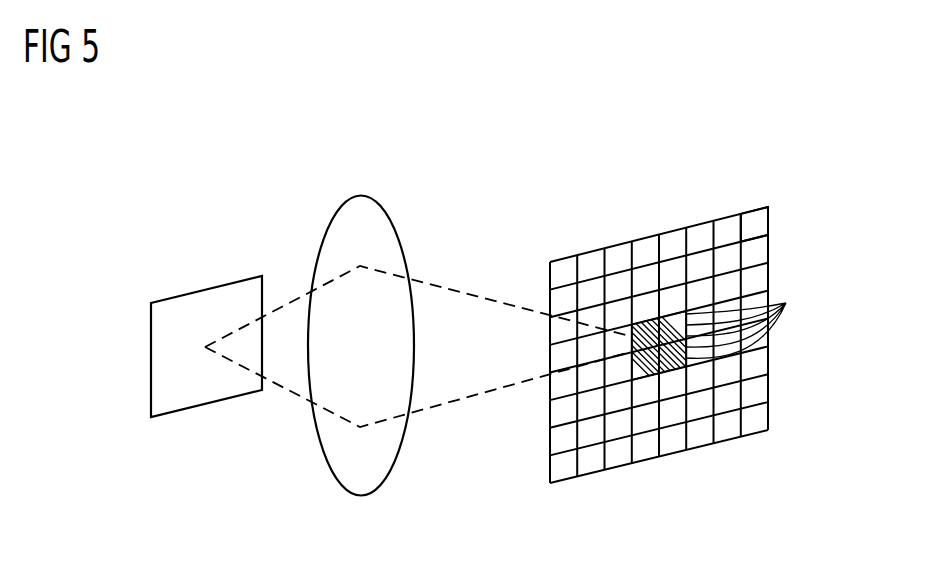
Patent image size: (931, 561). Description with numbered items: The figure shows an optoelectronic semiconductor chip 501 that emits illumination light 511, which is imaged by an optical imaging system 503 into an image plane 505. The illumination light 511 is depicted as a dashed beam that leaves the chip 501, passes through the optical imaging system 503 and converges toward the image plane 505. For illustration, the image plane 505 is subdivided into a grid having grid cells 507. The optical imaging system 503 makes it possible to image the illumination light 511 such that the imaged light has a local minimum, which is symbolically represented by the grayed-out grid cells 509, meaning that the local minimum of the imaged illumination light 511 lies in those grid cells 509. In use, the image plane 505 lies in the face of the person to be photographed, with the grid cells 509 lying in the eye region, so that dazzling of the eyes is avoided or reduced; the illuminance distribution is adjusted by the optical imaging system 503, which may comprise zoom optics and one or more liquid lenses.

The optoelectronic semiconductor chip 501 is at (207, 288).
The optical imaging system 503 is at (365, 195).
The image plane 505 is at (768, 258).
The grid cells 507 is at (758, 225).
The grayed-out grid cells 509 is at (747, 348).
The illumination light 511 is at (283, 389).